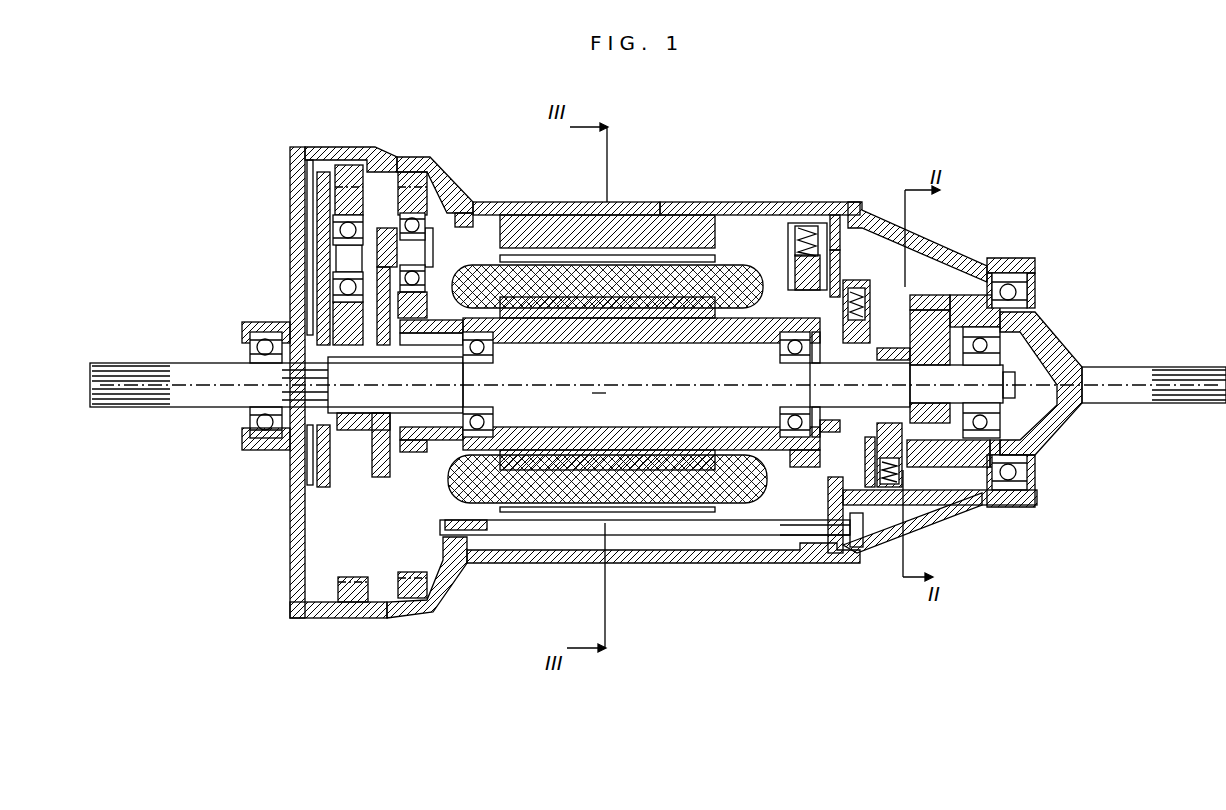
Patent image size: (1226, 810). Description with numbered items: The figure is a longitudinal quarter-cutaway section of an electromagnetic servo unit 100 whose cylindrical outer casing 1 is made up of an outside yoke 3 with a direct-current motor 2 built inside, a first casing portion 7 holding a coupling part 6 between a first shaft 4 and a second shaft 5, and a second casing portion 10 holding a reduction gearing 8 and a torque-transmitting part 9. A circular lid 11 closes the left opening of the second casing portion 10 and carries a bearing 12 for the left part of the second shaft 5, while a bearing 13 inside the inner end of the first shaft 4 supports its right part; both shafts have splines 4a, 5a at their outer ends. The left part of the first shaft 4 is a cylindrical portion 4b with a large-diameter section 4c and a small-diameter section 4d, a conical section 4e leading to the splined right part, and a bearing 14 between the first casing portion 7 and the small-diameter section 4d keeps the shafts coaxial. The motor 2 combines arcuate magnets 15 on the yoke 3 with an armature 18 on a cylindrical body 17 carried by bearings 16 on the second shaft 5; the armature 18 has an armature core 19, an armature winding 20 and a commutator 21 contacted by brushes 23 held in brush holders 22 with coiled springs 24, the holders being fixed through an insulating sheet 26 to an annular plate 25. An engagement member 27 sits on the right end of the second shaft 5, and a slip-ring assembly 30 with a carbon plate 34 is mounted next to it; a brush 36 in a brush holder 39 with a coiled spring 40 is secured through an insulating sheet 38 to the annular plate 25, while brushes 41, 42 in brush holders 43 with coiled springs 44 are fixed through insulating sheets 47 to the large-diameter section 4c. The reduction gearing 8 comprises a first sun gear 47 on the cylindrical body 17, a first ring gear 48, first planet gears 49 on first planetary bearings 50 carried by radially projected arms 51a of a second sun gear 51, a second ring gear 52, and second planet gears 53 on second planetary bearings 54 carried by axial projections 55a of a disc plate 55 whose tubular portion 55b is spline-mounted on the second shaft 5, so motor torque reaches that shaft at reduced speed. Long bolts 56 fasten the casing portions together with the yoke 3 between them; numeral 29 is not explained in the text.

The electromagnetic servo unit 100 is at (676, 133).
The cylindrical outer casing 1 is at (570, 202).
The direct-current motor 2 is at (740, 250).
The outside yoke 3 is at (625, 202).
The first shaft 4 is at (1115, 367).
The spline 4a is at (1180, 385).
The cylindrical portion 4b is at (967, 280).
The large-diameter section 4c is at (968, 310).
The small-diameter section 4d is at (1030, 458).
The conical section 4e is at (1055, 345).
The second shaft 5 is at (190, 400).
The spline 5a is at (135, 395).
The coupling part 6 is at (963, 292).
The first casing portion 7 is at (890, 228).
The reduction gearing 8 is at (465, 213).
The torque-transmitting part 9 is at (328, 218).
The second casing portion 10 is at (330, 150).
The circular lid 11 is at (297, 260).
The bearing 12 is at (245, 340).
The bearing 13 is at (1005, 335).
The bearing 14 is at (1022, 290).
The arcuate magnets 15 is at (665, 230).
The bearings 16 is at (465, 345).
The cylindrical body 17 is at (507, 285).
The armature 18 is at (720, 245).
The armature core 19 is at (540, 465).
The armature winding 20 is at (505, 480).
The commutator 21 is at (767, 325).
The brush holders 22 is at (800, 225).
The brushes 23 is at (790, 268).
The coiled spring 24 is at (810, 240).
The annular plate 25 is at (836, 260).
The insulating sheet 26 is at (838, 215).
The engagement member 27 is at (922, 292).
The plate 29 is at (895, 305).
The slip-ring assembly 30 is at (835, 432).
The carbon plate 34 is at (898, 350).
The brush 36 is at (855, 350).
The insulating sheet 38 is at (848, 283).
The brush holders 39 is at (877, 333).
The coiled springs 40 is at (818, 345).
The brush 41 is at (975, 498).
The brush 42 is at (982, 500).
The brush holders 43 is at (858, 548).
The coiled springs 44 is at (933, 473).
The insulating sheets 47 is at (410, 452).
The first ring gear 48 is at (412, 172).
The first planet gears 49 is at (445, 180).
The first planetary bearings 50 is at (388, 228).
The second sun gear 51 is at (345, 425).
The radially projected arms 51a is at (337, 330).
The second ring gear 52 is at (347, 168).
The second planet gears 53 is at (312, 160).
The second planetary bearings 54 is at (306, 215).
The disc plate 55 is at (327, 297).
The axial projections 55a is at (328, 238).
The tubular portion 55b is at (287, 450).
The long bolts 56 is at (690, 555).